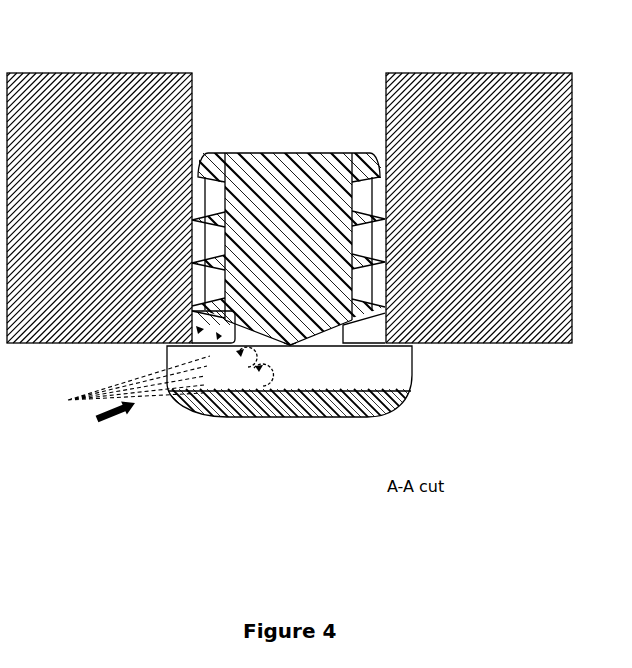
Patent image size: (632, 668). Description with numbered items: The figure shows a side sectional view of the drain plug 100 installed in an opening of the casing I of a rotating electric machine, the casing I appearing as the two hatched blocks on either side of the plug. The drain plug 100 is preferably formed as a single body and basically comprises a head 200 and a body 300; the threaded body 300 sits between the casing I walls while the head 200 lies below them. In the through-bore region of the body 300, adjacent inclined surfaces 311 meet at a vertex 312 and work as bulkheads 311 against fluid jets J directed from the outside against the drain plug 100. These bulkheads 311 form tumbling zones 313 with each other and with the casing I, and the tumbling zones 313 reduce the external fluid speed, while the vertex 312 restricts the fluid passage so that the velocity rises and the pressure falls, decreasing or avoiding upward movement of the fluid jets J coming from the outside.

The casing I is at (75, 97).
The drain plug 100 is at (282, 98).
The body 300 is at (306, 296).
The head 200 is at (378, 408).
The inclined surfaces 311 is at (278, 339).
The vertex 312 is at (291, 347).
The tumbling zones 313 is at (232, 348).
The fluid jets J is at (127, 389).